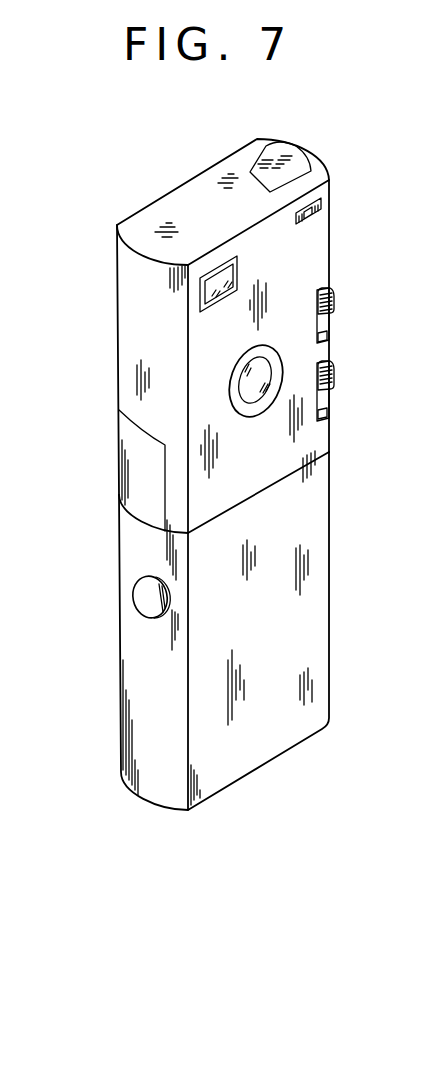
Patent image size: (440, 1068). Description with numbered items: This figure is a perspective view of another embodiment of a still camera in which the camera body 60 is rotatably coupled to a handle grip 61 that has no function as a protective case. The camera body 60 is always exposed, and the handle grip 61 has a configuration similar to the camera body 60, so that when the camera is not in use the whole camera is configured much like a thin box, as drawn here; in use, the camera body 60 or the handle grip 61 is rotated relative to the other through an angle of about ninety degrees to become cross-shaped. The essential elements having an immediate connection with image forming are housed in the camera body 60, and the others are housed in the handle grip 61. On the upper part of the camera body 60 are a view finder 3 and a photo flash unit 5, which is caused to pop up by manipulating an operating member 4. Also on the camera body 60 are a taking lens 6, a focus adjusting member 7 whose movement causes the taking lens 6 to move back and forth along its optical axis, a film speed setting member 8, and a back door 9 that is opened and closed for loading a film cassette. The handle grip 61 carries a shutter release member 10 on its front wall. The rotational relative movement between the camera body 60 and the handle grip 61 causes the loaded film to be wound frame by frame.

The view finder 3 is at (222, 277).
The operating member 4 is at (321, 206).
The photo flash unit 5 is at (292, 165).
The taking lens 6 is at (248, 390).
The focus adjusting member 7 is at (334, 380).
The film speed setting member 8 is at (334, 296).
The back door 9 is at (140, 461).
The shutter release member 10 is at (147, 596).
The camera body 60 is at (119, 314).
The handle grip 61 is at (114, 657).